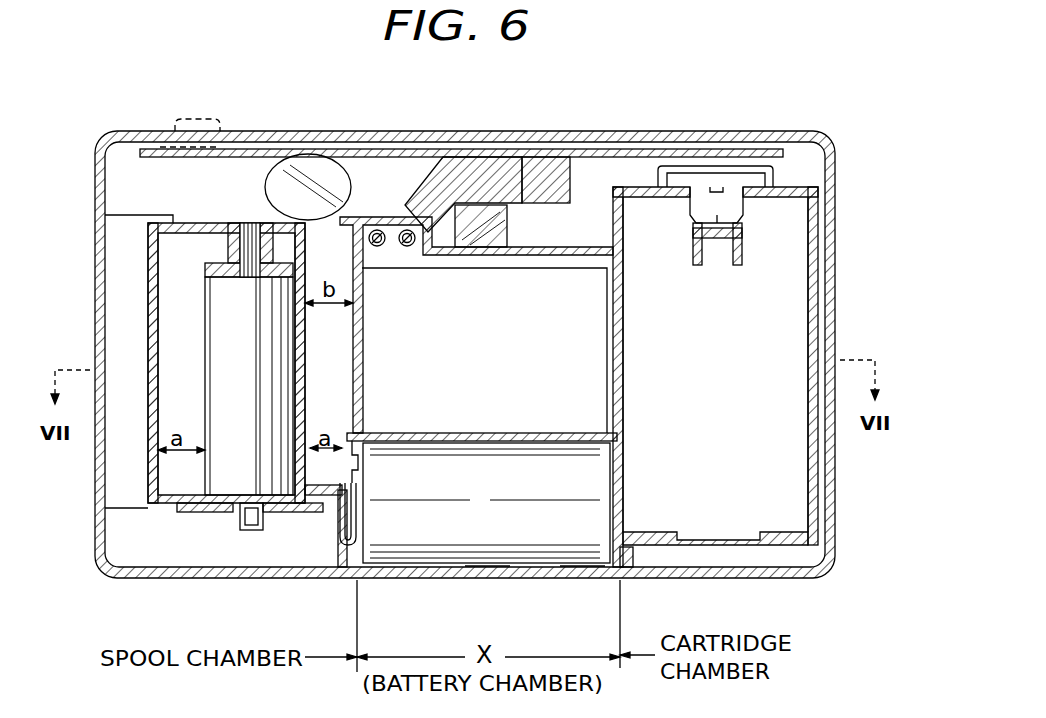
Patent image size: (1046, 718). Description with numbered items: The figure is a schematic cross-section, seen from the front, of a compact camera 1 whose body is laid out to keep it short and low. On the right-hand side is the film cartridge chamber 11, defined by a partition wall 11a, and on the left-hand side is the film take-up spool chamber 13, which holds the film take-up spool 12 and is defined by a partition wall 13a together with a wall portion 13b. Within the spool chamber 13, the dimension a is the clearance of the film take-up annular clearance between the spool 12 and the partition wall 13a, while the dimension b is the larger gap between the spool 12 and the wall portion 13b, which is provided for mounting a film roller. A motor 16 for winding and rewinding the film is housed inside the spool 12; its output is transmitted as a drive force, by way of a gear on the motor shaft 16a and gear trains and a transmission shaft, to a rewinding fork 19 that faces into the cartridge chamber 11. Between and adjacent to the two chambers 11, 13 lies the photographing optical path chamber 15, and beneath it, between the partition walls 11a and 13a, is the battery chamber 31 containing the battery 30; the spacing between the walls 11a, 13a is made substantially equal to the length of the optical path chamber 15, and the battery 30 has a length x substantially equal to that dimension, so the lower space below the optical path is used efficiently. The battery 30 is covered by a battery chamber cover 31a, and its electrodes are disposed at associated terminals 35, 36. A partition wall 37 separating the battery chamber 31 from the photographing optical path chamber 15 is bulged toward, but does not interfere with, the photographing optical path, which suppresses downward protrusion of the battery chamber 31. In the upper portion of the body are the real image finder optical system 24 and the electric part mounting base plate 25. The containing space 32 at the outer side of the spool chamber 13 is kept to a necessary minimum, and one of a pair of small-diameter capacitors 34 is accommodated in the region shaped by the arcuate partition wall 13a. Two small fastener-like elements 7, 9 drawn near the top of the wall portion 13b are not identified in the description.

The camera 1 is at (236, 128).
The screw 7 is at (377, 248).
The screw 9 is at (406, 248).
The film cartridge chamber 11 is at (805, 480).
The partition wall 11a is at (623, 358).
The film take-up spool 12 is at (170, 503).
The film take-up spool chamber 13 is at (315, 462).
The partition wall 13a is at (147, 428).
The wall portion 13b is at (363, 352).
The photographing optical path chamber 15 is at (517, 365).
The motor 16 is at (227, 473).
The motor shaft 16a is at (258, 530).
The rewinding fork 19 is at (720, 258).
The real image finder optical system 24 is at (490, 155).
The electric part mounting base plate 25 is at (597, 148).
The battery 30 is at (547, 545).
The battery chamber 31 is at (578, 578).
The battery chamber cover 31a is at (490, 578).
The containing space 32 is at (126, 196).
The capacitor 34 is at (120, 263).
The terminal 35 is at (350, 560).
The terminal 36 is at (625, 490).
The partition wall 37 is at (500, 434).